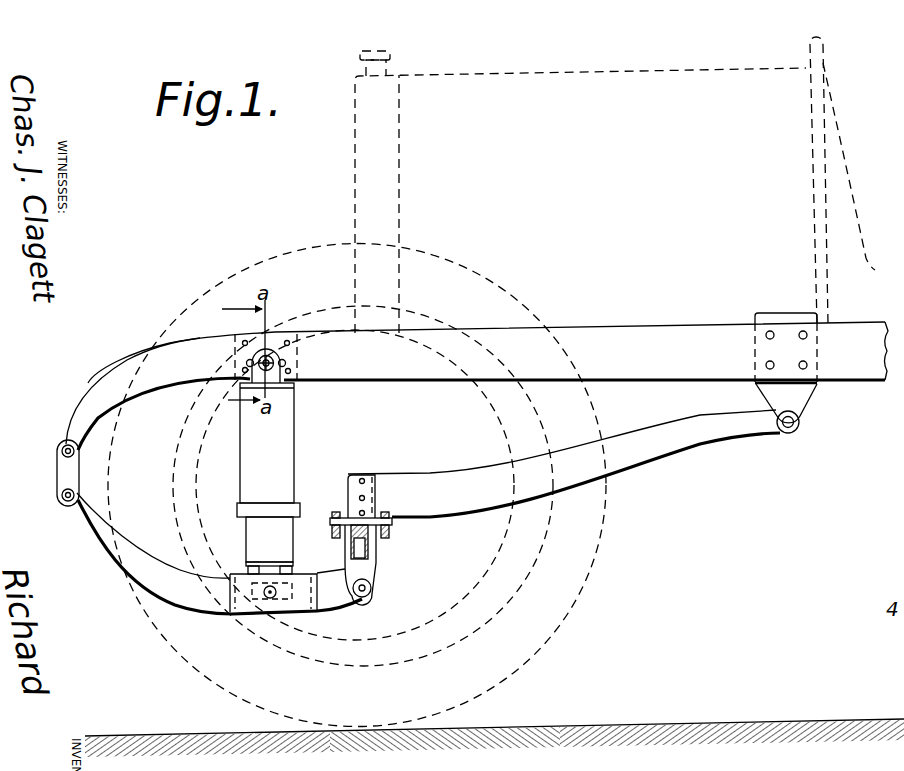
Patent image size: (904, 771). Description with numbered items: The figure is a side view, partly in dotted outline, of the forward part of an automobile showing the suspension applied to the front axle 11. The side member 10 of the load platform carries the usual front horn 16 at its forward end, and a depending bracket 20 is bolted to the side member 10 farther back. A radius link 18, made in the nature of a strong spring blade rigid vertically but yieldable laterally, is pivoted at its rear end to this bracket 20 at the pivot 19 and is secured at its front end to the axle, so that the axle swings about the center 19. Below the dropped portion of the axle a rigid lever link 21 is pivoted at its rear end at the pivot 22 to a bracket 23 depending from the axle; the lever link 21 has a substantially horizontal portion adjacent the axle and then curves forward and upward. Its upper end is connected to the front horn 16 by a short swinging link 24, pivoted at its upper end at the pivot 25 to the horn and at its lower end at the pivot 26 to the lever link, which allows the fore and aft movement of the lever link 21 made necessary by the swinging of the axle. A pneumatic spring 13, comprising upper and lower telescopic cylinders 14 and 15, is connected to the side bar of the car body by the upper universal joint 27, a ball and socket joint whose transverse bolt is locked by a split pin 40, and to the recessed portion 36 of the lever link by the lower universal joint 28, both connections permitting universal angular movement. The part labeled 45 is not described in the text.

The side member 10 is at (617, 332).
The front axle 11 is at (364, 547).
The pneumatic spring 13 is at (240, 508).
The upper cylinder 14 is at (267, 426).
The lower cylinder 15 is at (269, 545).
The front horn 16 is at (89, 394).
The radius link 18 is at (694, 443).
The pivot 19 is at (787, 430).
The depending bracket 20 is at (800, 403).
The lever link 21 is at (97, 537).
The pivot 22 is at (367, 596).
The bracket 23 is at (376, 576).
The swinging link 24 is at (58, 474).
The pivot 25 is at (61, 449).
The pivot 26 is at (62, 502).
The universal joint 27 is at (270, 354).
The universal joint 28 is at (277, 597).
The recessed portion 36 is at (258, 606).
The split pin 40 is at (246, 363).
The rivet 45 is at (292, 371).